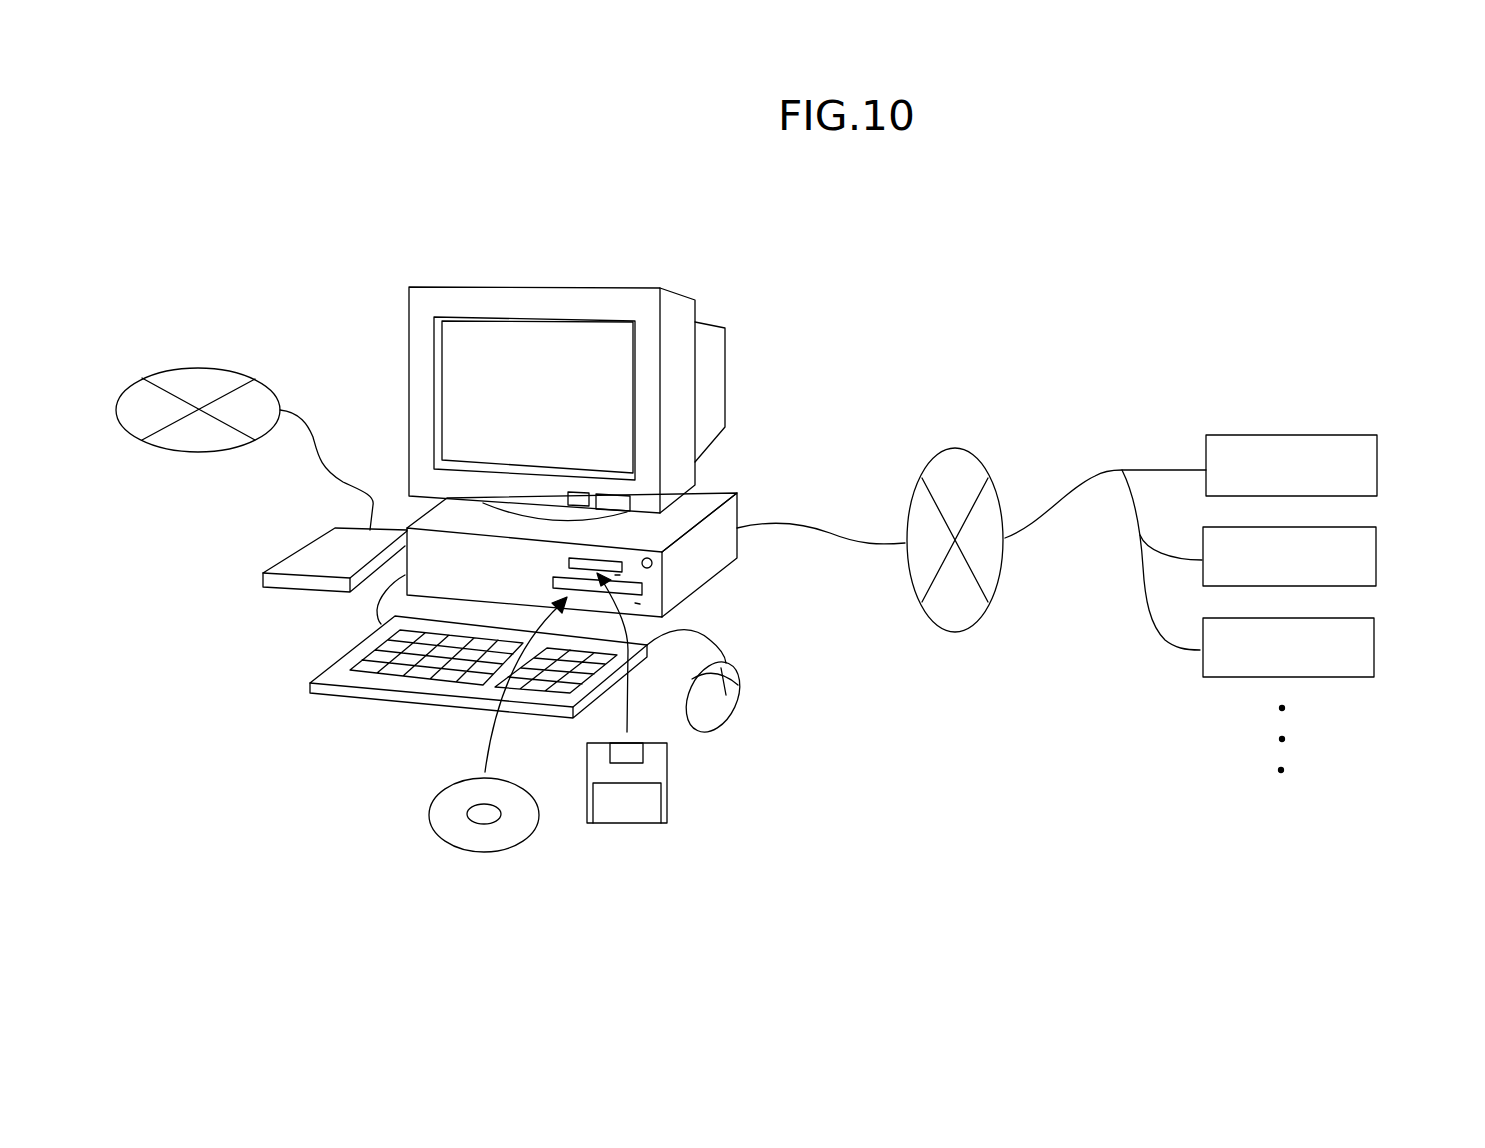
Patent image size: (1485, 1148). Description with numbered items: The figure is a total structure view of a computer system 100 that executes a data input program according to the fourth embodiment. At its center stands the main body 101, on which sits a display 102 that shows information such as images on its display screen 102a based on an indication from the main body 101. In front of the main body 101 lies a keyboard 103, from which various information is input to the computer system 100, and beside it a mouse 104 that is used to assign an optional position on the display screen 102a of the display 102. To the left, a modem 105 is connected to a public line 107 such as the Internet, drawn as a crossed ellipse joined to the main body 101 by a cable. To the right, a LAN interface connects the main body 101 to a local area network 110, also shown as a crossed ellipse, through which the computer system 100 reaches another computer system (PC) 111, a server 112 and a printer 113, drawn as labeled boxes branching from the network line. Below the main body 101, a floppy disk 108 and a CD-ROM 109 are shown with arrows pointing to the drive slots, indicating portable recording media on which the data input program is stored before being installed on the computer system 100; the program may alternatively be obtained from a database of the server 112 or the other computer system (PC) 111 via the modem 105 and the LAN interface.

The computer system 100 is at (618, 217).
The main body 101 is at (713, 495).
The display 102 is at (680, 315).
The display screen 102a is at (537, 348).
The keyboard 103 is at (338, 663).
The mouse 104 is at (717, 705).
The modem 105 is at (322, 555).
The public line 107 is at (168, 451).
The floppy disk (FD) 108 is at (630, 823).
The CD-ROM 109 is at (428, 813).
The local area network (LAN) 110 is at (960, 630).
The other computer system (PC) 111 is at (1377, 463).
The server 112 is at (1376, 555).
The printer 113 is at (1374, 645).